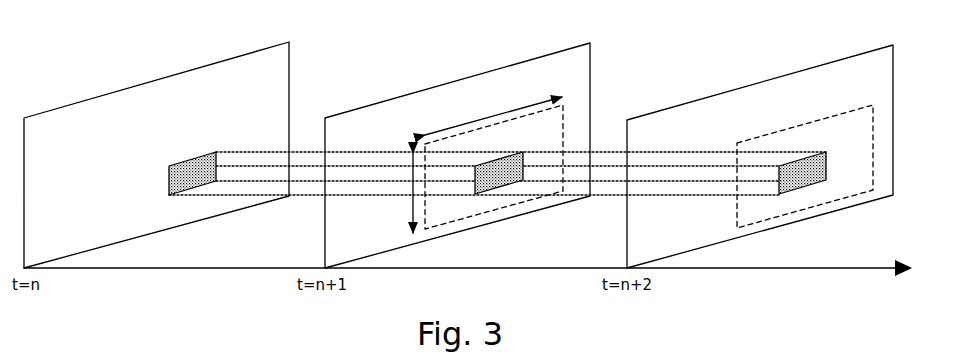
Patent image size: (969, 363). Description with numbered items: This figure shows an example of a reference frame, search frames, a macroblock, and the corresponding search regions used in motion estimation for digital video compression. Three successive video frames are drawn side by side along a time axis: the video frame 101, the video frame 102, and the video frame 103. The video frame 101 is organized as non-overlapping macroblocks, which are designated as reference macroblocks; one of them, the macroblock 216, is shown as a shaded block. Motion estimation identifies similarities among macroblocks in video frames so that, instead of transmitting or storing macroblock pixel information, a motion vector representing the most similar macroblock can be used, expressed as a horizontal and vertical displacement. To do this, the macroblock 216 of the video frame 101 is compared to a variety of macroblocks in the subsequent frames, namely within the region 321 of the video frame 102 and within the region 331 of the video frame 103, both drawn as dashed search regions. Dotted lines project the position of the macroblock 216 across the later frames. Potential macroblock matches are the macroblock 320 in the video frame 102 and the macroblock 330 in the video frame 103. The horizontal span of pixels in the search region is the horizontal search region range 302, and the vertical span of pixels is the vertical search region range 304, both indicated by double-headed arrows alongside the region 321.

The video frame 101 is at (138, 85).
The video frame 102 is at (468, 78).
The video frame 103 is at (745, 88).
The macroblock 216 is at (178, 188).
The macroblock 320 is at (487, 188).
The region 321 is at (468, 212).
The horizontal search region range 302 is at (493, 116).
The vertical search region range 304 is at (377, 193).
The macroblock 330 is at (788, 188).
The region 331 is at (747, 225).